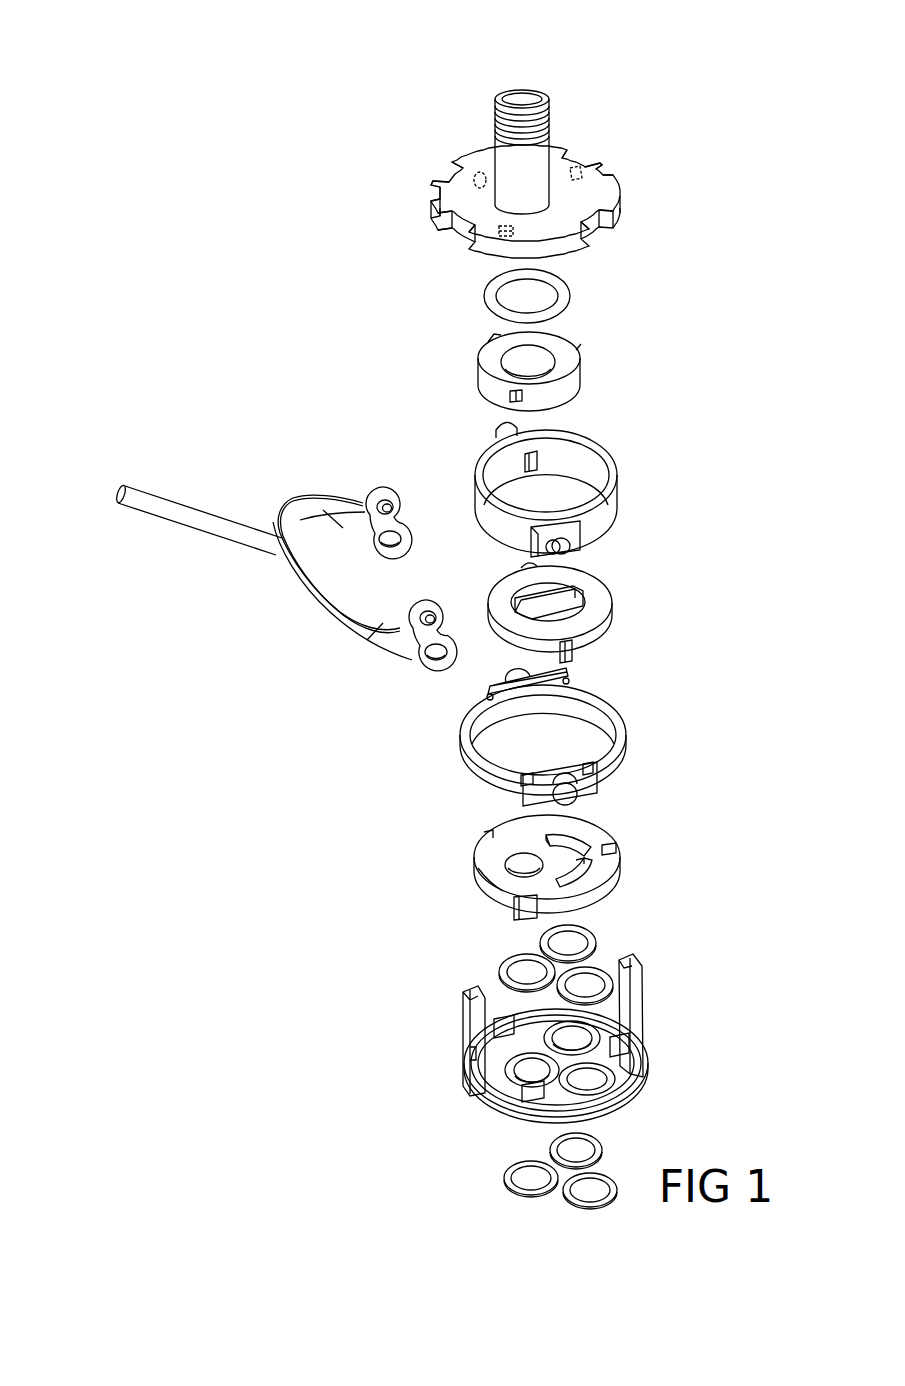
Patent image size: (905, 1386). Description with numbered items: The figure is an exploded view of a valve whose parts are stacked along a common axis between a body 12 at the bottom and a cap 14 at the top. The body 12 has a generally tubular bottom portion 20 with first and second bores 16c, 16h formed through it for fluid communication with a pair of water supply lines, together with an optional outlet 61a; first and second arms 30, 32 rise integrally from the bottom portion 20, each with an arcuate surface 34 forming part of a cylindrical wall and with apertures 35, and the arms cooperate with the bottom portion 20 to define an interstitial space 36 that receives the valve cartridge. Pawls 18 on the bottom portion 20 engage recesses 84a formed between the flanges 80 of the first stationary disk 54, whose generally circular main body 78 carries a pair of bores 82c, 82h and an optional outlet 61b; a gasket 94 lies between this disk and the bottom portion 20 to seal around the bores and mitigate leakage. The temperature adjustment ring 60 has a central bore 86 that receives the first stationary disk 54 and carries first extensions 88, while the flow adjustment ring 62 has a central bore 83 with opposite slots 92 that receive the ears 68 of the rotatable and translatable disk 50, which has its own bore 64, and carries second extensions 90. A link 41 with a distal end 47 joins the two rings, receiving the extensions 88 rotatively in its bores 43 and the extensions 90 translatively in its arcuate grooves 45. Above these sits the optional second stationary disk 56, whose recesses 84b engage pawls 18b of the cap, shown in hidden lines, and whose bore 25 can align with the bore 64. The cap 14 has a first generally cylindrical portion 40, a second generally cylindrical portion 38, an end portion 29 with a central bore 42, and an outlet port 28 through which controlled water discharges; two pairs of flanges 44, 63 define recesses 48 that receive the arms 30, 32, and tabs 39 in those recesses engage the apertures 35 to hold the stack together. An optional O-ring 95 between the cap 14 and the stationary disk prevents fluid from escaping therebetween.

The body 12 is at (458, 1078).
The cap 14 is at (562, 140).
The first bore 16c is at (560, 1043).
The second bore 16h is at (600, 1082).
The pawls 18 is at (500, 1015).
The pawls 18b is at (478, 178).
The bottom portion 20 is at (520, 1092).
The bore 25 is at (535, 352).
The outlet port 28 is at (537, 85).
The end portion 29 is at (500, 93).
The first arm 30 is at (465, 1033).
The second arm 32 is at (643, 1013).
The arcuate surface 34 is at (467, 1054).
The apertures 35 is at (463, 1018).
The interstitial space 36 is at (613, 1010).
The second generally cylindrical portion 38 is at (458, 177).
The tabs 39 is at (610, 184).
The first generally cylindrical portion 40 is at (538, 192).
The link 41 is at (390, 650).
The central bore 42 is at (516, 85).
The bores 43 is at (395, 541).
The flanges 44 is at (432, 175).
The arcuate grooves 45 is at (385, 505).
The distal end 47 is at (160, 497).
The recess 48 is at (605, 172).
The rotatable and translatable disk 50 is at (618, 620).
The first stationary disk 54 is at (615, 832).
The second stationary disk 56 is at (585, 368).
The temperature adjustment ring 60 is at (630, 715).
The outlet 61a is at (515, 1075).
The outlet 61b is at (505, 847).
The flow adjustment ring 62 is at (618, 498).
The flanges 63 is at (585, 147).
The bore 64 is at (578, 593).
The ears 68 is at (532, 565).
The main body 78 is at (495, 897).
The flanges 80 is at (520, 820).
The bore 82c is at (572, 840).
The bore 82h is at (583, 866).
The central bore 83 is at (583, 452).
The recesses 84a is at (500, 833).
The recesses 84b is at (580, 355).
The central bore 86 is at (580, 720).
The first extensions 88 is at (500, 690).
The second extensions 90 is at (497, 425).
The slots 92 is at (537, 460).
The gasket 94 is at (551, 1030).
The O-ring 95 is at (495, 306).